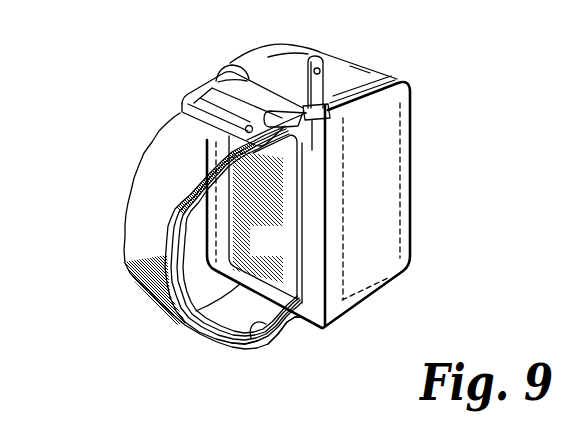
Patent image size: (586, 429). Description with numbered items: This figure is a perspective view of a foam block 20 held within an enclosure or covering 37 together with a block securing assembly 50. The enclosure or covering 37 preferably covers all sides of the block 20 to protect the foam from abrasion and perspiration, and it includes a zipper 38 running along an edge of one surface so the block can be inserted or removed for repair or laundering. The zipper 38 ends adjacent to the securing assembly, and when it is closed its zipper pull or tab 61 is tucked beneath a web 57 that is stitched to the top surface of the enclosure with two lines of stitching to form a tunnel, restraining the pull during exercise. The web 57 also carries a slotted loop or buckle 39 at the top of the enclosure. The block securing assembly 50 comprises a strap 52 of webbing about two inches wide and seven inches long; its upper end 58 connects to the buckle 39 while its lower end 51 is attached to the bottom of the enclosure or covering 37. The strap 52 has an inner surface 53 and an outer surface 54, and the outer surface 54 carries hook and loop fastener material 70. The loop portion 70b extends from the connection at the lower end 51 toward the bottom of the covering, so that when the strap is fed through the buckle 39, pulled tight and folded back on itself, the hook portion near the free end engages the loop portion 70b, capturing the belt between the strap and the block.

The block 20 is at (452, 167).
The enclosure or covering 37 is at (394, 253).
The zipper 38 is at (382, 79).
The slotted loop or buckle 39 is at (180, 110).
The block securing assembly 50 is at (98, 209).
The lower end of strap 51 is at (291, 327).
The strap 52 is at (123, 254).
The inner surface of strap 53 is at (256, 330).
The outer surface of strap 54 is at (247, 347).
The web 57 is at (223, 68).
The upper end of strap 58 is at (196, 99).
The zipper pull or tab 61 is at (318, 54).
The hook and loop fastener material 70 is at (281, 253).
The loop portion 70b is at (168, 318).